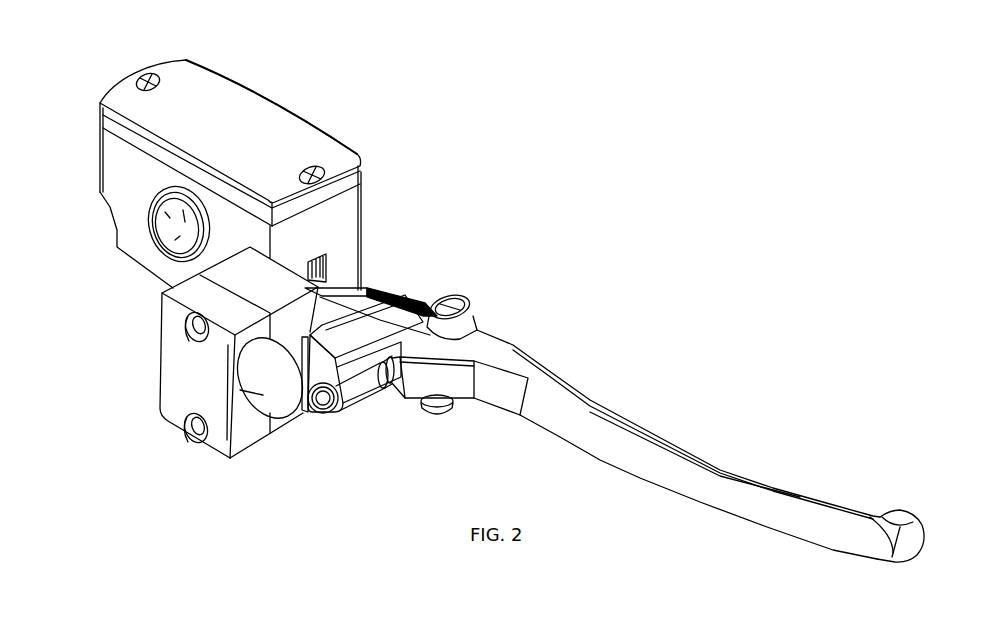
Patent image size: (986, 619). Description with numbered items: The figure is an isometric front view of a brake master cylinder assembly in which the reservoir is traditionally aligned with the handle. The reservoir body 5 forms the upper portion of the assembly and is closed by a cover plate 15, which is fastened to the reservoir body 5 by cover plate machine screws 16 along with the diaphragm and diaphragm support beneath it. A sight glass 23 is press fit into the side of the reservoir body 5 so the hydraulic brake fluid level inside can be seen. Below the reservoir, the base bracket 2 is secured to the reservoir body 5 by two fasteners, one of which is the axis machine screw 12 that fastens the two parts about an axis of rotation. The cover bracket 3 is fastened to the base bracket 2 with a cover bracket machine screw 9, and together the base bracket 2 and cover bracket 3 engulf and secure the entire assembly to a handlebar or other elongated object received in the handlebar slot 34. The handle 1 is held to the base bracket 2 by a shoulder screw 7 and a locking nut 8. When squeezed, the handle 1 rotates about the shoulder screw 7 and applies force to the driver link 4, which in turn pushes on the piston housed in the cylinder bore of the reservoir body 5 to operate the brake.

The handle 1 is at (513, 345).
The base bracket 2 is at (305, 283).
The cover bracket 3 is at (248, 447).
The driver link 4 is at (407, 400).
The reservoir body 5 is at (125, 171).
The shoulder screw 7 is at (463, 298).
The locking nut 8 is at (446, 412).
The cover bracket machine screw 9 is at (188, 342).
The axis machine screw 12 is at (347, 412).
The cover plate 15 is at (123, 98).
The cover plate machine screw 16 is at (311, 170).
The sight glass 23 is at (167, 233).
The handlebar slot 34 is at (263, 393).